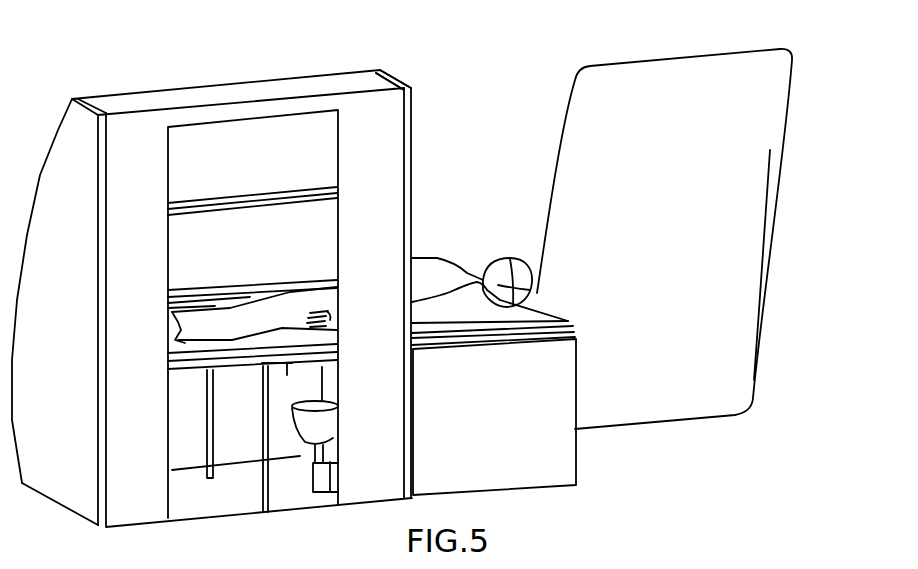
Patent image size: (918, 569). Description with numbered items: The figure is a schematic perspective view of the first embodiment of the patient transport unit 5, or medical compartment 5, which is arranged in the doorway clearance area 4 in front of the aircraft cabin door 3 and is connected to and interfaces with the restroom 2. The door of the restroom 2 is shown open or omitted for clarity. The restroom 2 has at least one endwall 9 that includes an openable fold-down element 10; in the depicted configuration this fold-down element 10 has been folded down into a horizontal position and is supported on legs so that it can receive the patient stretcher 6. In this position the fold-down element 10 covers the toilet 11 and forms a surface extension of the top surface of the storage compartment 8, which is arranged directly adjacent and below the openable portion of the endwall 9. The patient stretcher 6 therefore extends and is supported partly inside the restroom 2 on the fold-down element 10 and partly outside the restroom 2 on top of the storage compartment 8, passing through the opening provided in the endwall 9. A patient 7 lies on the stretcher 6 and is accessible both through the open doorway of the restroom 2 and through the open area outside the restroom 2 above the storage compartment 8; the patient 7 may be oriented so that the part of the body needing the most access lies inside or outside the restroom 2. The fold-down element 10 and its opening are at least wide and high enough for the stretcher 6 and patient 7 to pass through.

The restroom 2 is at (266, 62).
The cabin door 3 is at (686, 206).
The doorway clearance area 4 is at (665, 501).
The patient transport unit 5 is at (795, 213).
The patient stretcher 6 is at (578, 334).
The patient 7 is at (444, 282).
The storage compartment 8 is at (478, 443).
The endwall 9 is at (400, 80).
The fold-down element 10 is at (291, 368).
The toilet 11 is at (317, 432).